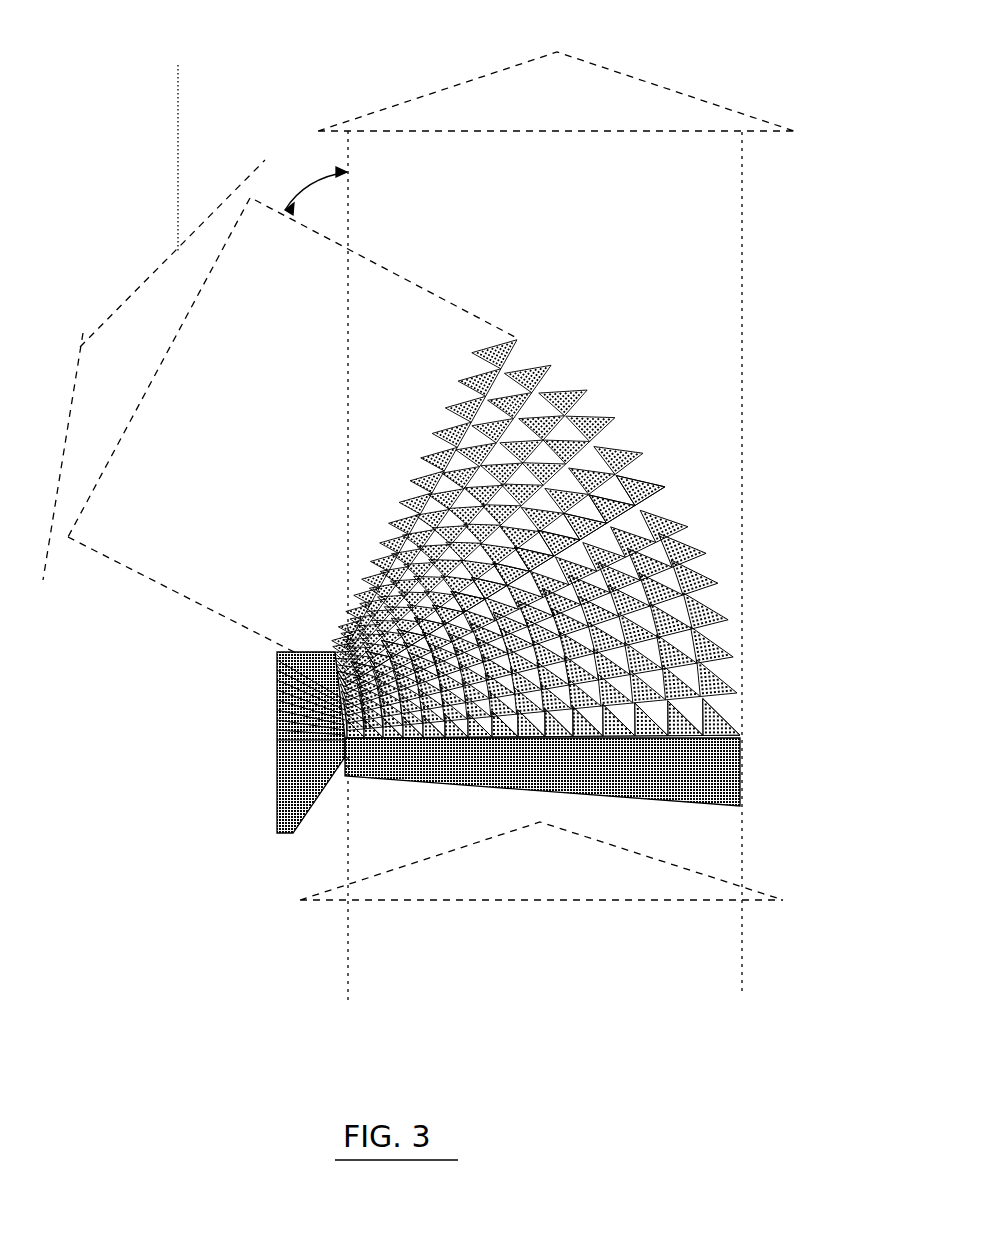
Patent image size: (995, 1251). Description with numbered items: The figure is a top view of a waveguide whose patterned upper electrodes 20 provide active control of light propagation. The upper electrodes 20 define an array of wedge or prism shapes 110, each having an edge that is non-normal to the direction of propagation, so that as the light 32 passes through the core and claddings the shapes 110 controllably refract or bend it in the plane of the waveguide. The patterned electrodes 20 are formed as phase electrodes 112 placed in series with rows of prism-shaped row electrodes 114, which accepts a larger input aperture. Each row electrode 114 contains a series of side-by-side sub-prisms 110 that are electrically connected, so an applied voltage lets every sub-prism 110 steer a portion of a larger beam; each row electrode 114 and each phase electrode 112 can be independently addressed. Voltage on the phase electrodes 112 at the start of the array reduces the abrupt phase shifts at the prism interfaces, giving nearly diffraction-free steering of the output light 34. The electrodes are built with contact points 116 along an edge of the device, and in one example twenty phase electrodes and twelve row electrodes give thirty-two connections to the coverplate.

The upper electrodes 20 is at (509, 606).
The light 32 is at (612, 878).
The output light 34 is at (458, 97).
The shapes 110 is at (690, 560).
The phase electrodes 112 is at (720, 777).
The row electrodes 114 is at (690, 566).
The contact points 116 is at (277, 688).